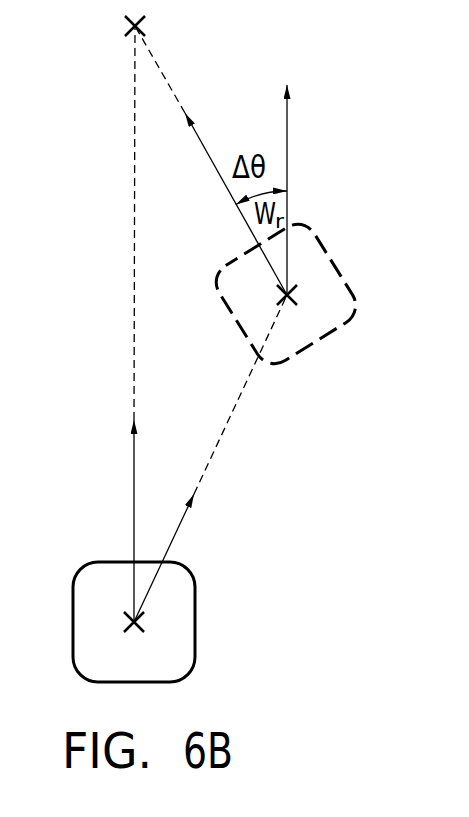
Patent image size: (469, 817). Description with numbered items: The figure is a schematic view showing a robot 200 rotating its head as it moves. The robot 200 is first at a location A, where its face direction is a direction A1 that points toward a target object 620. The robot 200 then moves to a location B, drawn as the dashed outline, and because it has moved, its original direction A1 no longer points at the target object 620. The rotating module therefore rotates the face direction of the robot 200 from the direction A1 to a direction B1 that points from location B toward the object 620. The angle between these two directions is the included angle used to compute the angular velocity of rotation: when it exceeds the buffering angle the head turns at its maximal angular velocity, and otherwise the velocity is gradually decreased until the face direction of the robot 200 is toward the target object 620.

The robot 200 is at (197, 621).
The target object 620 is at (128, 27).
The location A is at (123, 627).
The location B is at (299, 296).
The direction A1 is at (213, 324).
The direction B1 is at (211, 160).